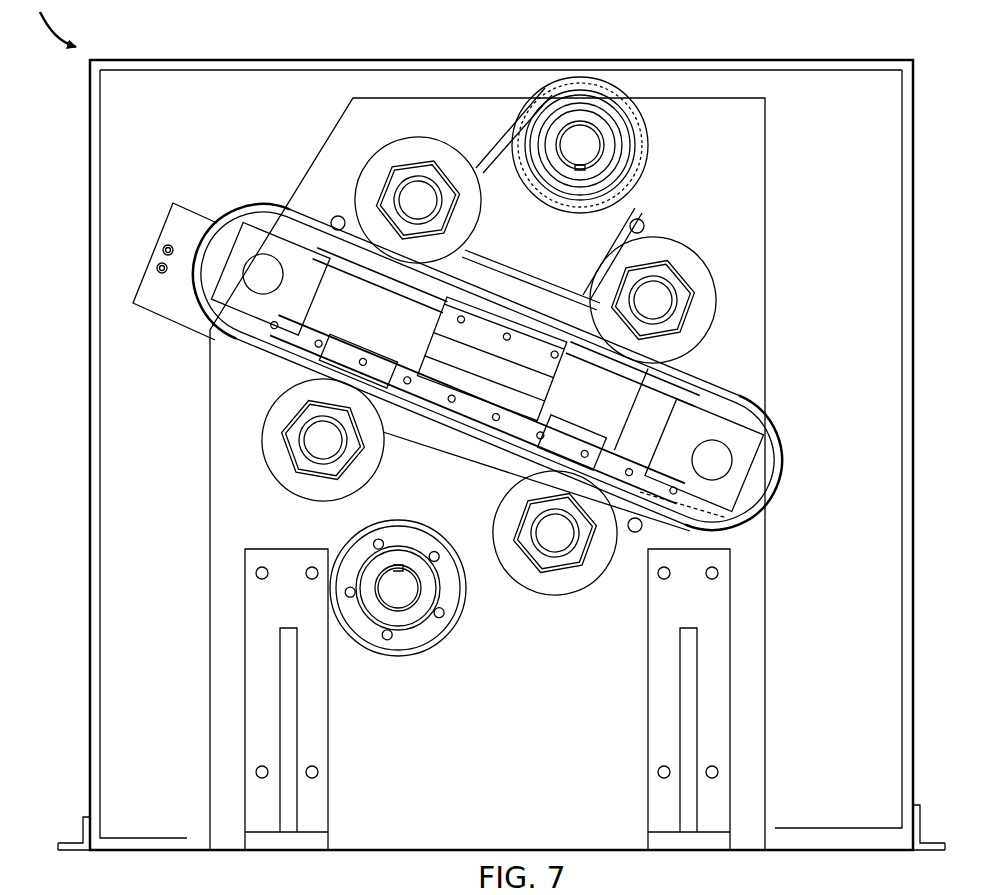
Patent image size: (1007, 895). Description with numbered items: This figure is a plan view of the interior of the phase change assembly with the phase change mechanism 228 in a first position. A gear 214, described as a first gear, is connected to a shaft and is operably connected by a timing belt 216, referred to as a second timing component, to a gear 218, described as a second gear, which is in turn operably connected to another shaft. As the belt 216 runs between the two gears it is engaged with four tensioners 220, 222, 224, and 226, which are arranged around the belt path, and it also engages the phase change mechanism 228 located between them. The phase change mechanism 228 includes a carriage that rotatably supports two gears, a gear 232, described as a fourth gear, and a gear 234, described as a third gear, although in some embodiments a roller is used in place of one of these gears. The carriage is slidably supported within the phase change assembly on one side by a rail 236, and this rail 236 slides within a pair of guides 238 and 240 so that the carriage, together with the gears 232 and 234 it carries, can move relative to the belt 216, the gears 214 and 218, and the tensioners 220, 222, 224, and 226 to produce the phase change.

The gear 214 is at (598, 108).
The timing belt 216 is at (493, 158).
The gear 218 is at (400, 656).
The tensioner 220 is at (367, 170).
The tensioner 222 is at (262, 440).
The tensioner 224 is at (545, 590).
The tensioner 226 is at (668, 240).
The phase change mechanism 228 is at (737, 362).
The gear 232 is at (245, 219).
The gear 234 is at (763, 427).
The rail 236 is at (237, 297).
The guide 238 is at (343, 338).
The guide 240 is at (593, 427).